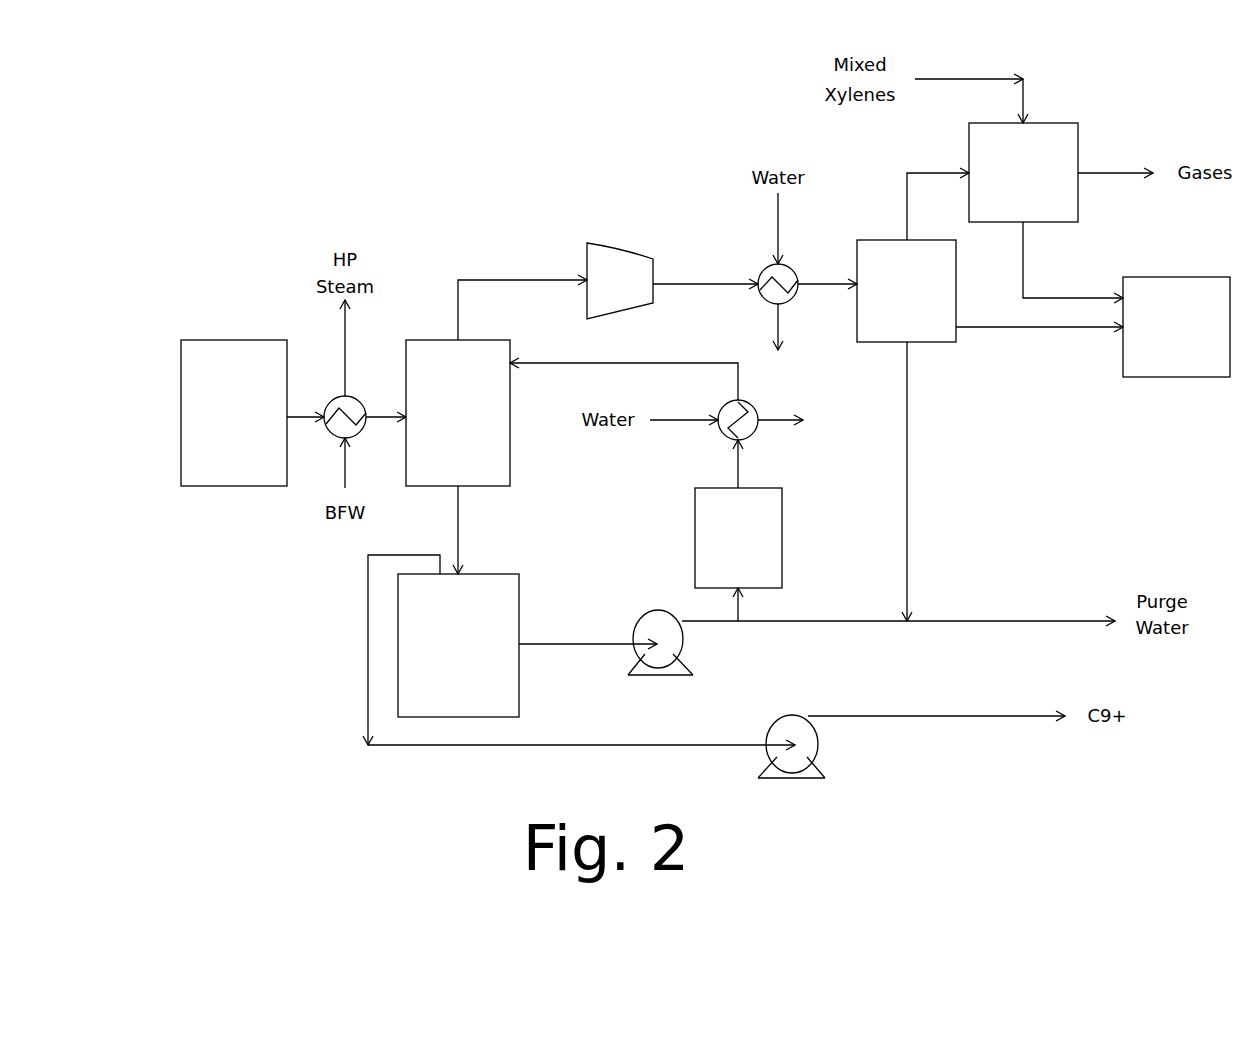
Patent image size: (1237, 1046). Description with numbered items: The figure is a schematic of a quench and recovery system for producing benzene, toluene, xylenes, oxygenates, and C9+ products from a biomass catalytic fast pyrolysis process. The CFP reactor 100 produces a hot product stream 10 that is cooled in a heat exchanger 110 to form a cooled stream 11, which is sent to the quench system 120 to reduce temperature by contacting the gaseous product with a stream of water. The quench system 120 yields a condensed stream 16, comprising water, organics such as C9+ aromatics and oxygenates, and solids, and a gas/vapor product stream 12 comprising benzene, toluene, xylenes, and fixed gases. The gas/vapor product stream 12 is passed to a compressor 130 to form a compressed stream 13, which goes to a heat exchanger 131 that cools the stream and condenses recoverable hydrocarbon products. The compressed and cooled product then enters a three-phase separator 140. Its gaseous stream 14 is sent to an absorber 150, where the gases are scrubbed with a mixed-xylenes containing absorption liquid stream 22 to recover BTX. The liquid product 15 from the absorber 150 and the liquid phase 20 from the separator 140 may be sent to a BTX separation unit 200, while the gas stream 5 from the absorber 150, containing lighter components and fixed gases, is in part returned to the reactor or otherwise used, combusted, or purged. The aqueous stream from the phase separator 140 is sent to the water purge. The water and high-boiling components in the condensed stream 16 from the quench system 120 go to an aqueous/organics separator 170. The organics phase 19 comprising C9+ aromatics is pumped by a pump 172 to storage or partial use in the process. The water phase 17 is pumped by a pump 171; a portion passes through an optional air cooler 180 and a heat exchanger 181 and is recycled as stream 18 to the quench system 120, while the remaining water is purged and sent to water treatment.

The CFP reactor 100 is at (234, 413).
The heat exchanger 110 is at (333, 435).
The quench system 120 is at (458, 413).
The compressor 130 is at (620, 281).
The heat exchanger 131 is at (754, 271).
The 3-phase separator 140 is at (906, 291).
The absorber 150 is at (1023, 172).
The BTX separation unit 200 is at (1176, 327).
The aqueous/organics separator 170 is at (458, 645).
The pump 171 is at (641, 632).
The pump 172 is at (772, 743).
The air cooler 180 is at (738, 530).
The heat exchanger 181 is at (726, 429).
The gas stream 5 is at (1131, 165).
The product stream 10 is at (303, 412).
The cooled stream 11 is at (378, 412).
The gas/vapor product stream 12 is at (481, 277).
The compressed stream 13 is at (671, 278).
The gaseous stream 14 is at (919, 165).
The liquid product 15 is at (1028, 243).
The condensed stream 16 is at (461, 508).
The water phase 17 is at (557, 640).
The recycled stream 18 is at (672, 358).
The organics phase 19 is at (563, 740).
The liquid phase 20 is at (1000, 335).
The mixed-xylenes absorption liquid stream 22 is at (1034, 95).